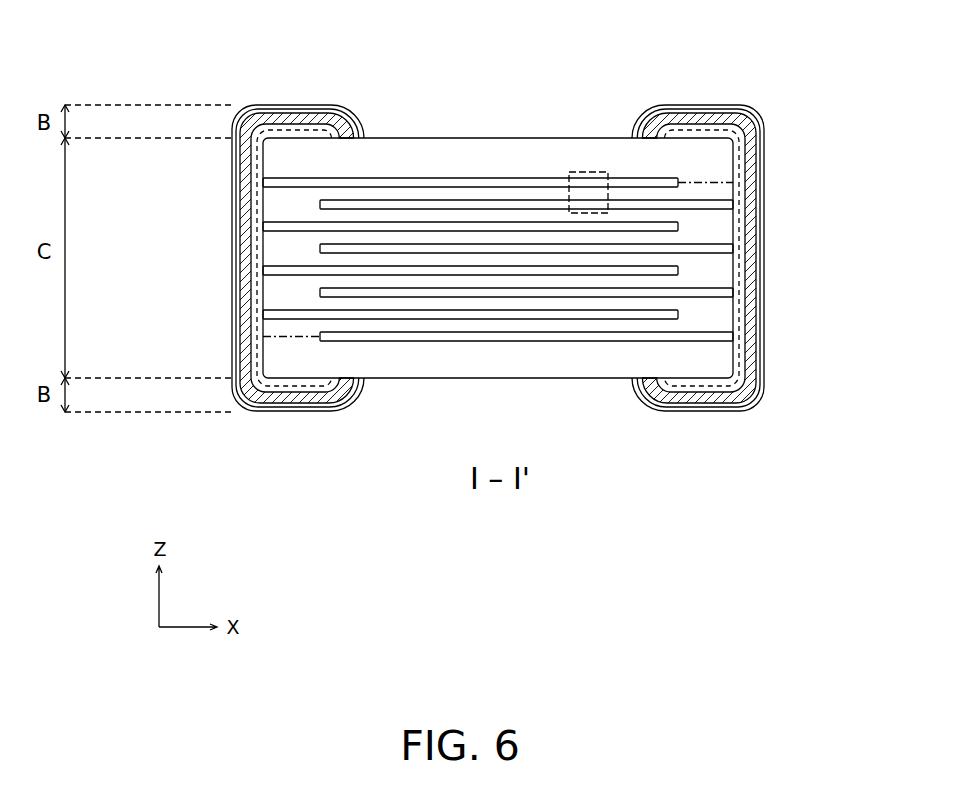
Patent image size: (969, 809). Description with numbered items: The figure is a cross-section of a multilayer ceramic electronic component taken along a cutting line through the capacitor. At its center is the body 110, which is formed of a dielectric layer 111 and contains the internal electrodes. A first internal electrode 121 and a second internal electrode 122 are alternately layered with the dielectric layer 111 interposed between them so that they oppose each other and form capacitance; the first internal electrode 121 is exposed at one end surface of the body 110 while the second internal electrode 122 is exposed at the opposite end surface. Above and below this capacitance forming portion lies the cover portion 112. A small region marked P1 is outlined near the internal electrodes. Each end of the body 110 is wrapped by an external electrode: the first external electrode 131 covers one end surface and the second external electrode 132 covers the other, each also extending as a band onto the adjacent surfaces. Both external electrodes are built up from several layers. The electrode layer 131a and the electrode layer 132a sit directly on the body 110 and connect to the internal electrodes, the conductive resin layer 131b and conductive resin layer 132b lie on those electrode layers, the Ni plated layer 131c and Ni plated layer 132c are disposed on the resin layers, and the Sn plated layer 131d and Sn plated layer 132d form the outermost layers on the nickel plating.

The body 110 is at (433, 137).
The dielectric layer 111 is at (378, 216).
The cover portion 112 is at (485, 153).
The first internal electrode 121 is at (546, 172).
The second internal electrode 122 is at (617, 200).
The region P1 is at (583, 172).
The first external electrode 131 is at (224, 258).
The electrode layer 131a is at (236, 283).
The conductive resin layer 131b is at (236, 311).
The Ni plated layer 131c is at (236, 339).
The Sn plated layer 131d is at (236, 367).
The second external electrode 132 is at (772, 258).
The electrode layer 132a is at (737, 244).
The conductive resin layer 132b is at (737, 272).
The Ni plated layer 132c is at (737, 300).
The Sn plated layer 132d is at (737, 328).